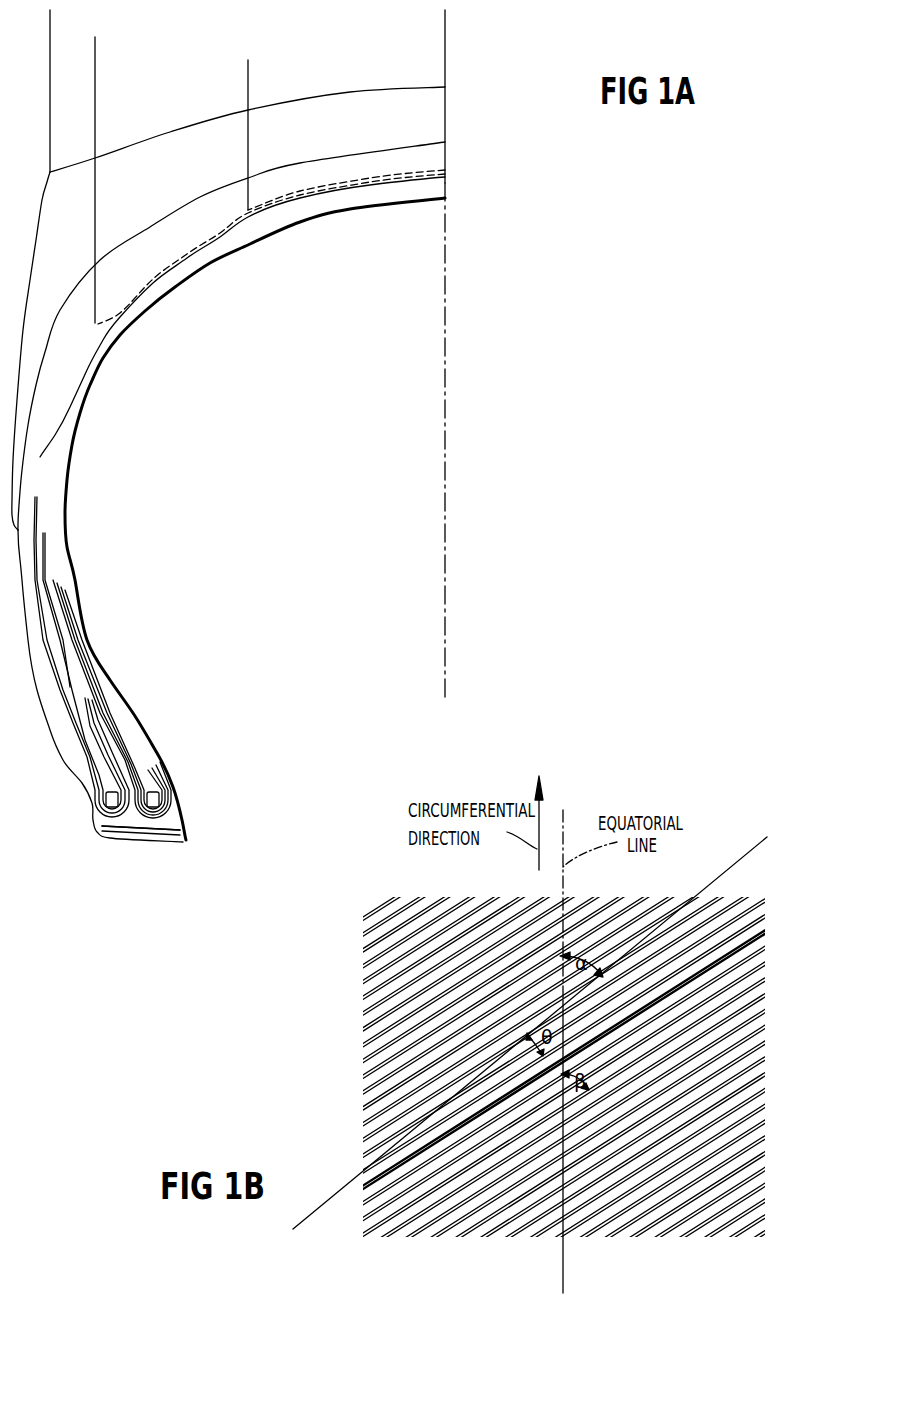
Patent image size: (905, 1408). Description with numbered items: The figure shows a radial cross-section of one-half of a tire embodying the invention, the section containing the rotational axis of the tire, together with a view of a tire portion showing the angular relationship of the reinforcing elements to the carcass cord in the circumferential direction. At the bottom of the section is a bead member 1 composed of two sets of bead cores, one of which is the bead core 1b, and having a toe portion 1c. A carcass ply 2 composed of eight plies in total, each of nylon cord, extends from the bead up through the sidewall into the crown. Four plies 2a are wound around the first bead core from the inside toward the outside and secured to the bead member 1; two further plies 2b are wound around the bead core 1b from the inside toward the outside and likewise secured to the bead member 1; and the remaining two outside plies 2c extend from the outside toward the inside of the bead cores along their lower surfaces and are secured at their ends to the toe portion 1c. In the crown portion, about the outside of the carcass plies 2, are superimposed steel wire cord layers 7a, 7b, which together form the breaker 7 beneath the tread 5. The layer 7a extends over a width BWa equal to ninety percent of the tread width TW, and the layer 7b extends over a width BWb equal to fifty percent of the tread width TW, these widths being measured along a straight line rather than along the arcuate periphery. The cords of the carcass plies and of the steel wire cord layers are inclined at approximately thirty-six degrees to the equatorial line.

In FIG. 1A, the bead member 1 is at (148, 777).
In FIG. 1A, the bead core 1b is at (105, 800).
In FIG. 1A, the toe portion 1c is at (186, 830).
In FIG. 1A, the carcass ply 2 is at (78, 391).
In FIG. 1B, the carcass ply 2 is at (749, 851).
In FIG. 1A, the plies 2a is at (63, 590).
In FIG. 1A, the plies 2b is at (48, 553).
In FIG. 1A, the outside plies 2c is at (36, 512).
In FIG. 1A, the tread 5 is at (170, 150).
In FIG. 1B, the belt layer 7 is at (762, 985).
In FIG. 1A, the steel wire cord layer 7a is at (222, 236).
In FIG. 1A, the steel wire cord layer 7b is at (421, 171).
In FIG. 1A, the tread width TW is at (50, 25).
In FIG. 1A, the width of steel wire cord layer 7a BWa is at (95, 45).
In FIG. 1A, the width of steel wire cord layer 7b BWb is at (248, 70).